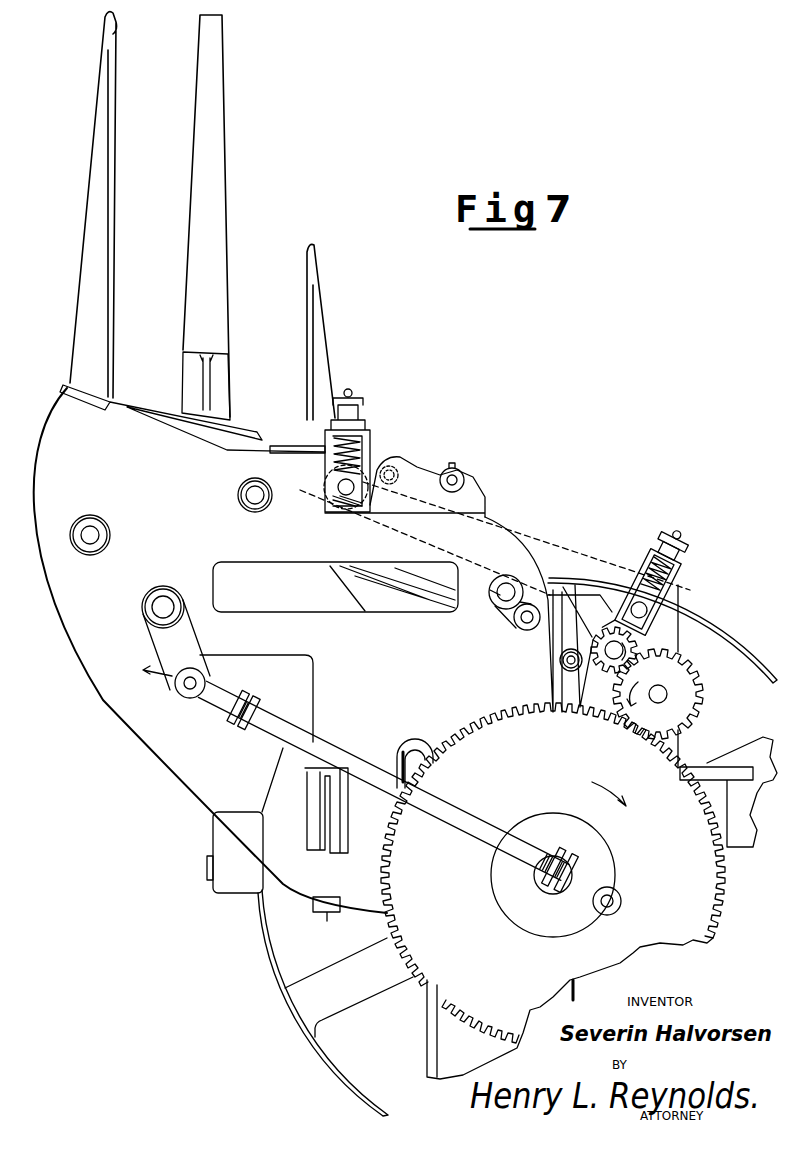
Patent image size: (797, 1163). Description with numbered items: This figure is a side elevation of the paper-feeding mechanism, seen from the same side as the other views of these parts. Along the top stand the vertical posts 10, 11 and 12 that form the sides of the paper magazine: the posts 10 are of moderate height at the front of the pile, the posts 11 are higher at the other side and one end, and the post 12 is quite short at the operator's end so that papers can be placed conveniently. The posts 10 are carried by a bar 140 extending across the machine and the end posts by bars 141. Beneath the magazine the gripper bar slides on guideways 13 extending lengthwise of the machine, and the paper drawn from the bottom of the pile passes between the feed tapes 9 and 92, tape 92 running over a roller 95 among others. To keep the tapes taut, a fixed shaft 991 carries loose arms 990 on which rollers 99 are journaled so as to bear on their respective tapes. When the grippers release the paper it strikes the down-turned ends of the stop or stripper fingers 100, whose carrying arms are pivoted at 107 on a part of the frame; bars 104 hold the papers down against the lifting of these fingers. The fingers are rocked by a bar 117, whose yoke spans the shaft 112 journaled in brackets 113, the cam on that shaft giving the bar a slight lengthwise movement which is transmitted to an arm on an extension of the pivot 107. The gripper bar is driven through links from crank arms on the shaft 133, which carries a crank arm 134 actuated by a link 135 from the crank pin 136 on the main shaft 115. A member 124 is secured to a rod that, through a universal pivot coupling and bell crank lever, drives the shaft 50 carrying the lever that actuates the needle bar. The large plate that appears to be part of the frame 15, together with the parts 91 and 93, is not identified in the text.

The feed tape 9 is at (629, 678).
The vertical posts 10 is at (322, 333).
The vertical posts 11 is at (100, 147).
The vertical post 12 is at (220, 372).
The guideways 13 is at (405, 598).
The frame 15 is at (66, 612).
The shaft 50 is at (90, 535).
The roller 91 is at (252, 493).
The feed tape 92 is at (572, 527).
The spring plunger 93 is at (344, 485).
The roller 95 is at (562, 663).
The roller 99 is at (393, 468).
The stop or stripper fingers 100 is at (612, 600).
The bar 104 is at (614, 622).
The pivot 107 is at (506, 588).
The shaft 112 is at (208, 868).
The bracket 113 is at (225, 834).
The main shaft 115 is at (553, 855).
The bar 117 is at (411, 746).
The member secured to rod 124 is at (320, 822).
The shaft 133 is at (163, 603).
The crank arm 134 is at (180, 637).
The link 135 is at (350, 775).
The crank pin 136 is at (621, 900).
The bar 140 is at (287, 447).
The bar 141 is at (243, 428).
The arm 990 is at (428, 470).
The fixed shaft 991 is at (464, 482).